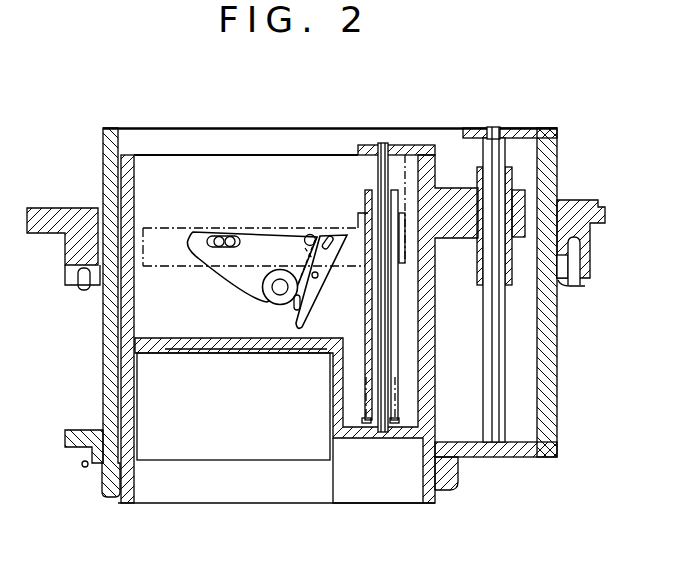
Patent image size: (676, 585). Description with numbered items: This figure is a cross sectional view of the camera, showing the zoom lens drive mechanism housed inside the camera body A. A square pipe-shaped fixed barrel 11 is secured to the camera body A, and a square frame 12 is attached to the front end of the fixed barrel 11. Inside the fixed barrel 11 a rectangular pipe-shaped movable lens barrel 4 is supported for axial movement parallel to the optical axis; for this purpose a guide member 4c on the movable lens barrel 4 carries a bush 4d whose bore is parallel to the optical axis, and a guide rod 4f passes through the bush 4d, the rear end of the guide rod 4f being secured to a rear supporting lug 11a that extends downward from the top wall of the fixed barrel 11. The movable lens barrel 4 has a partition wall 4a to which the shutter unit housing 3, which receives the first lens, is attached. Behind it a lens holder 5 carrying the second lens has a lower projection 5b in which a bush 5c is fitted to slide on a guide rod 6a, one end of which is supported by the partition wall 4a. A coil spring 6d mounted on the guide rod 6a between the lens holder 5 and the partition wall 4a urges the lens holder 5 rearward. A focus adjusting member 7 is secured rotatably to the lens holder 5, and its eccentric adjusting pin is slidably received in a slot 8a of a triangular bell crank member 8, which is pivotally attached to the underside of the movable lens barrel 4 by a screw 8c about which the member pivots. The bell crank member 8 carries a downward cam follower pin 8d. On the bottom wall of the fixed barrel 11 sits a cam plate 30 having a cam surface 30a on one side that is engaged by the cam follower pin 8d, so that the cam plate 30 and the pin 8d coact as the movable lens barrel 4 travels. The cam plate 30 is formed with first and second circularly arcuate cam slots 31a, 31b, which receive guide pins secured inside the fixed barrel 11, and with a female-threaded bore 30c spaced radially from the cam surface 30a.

The camera body A is at (53, 207).
The shutter unit housing 3 is at (262, 457).
The movable lens barrel 4 is at (133, 480).
The partition wall 4a is at (120, 342).
The guide member 4c is at (525, 205).
The bush 4d is at (512, 172).
The guide rod 4f is at (507, 393).
The lens holder 5 is at (157, 227).
The lower projection 5b is at (406, 160).
The bush 5c is at (378, 165).
The guide rod 6a is at (368, 195).
The coil spring 6d is at (395, 425).
The focus adjusting member 7 is at (220, 238).
The bell crank member 8 is at (232, 268).
The slot 8a is at (232, 236).
The screw 8c is at (276, 290).
The cam follower pin 8d is at (305, 247).
The fixed barrel 11 is at (105, 316).
The rear supporting lug 11a is at (495, 127).
The square frame 12 is at (475, 458).
The cam plate 30 is at (308, 300).
The cam surface 30a is at (327, 240).
The bore 30c is at (318, 278).
The first cam slot 31a is at (314, 236).
The second cam slot 31b is at (292, 308).